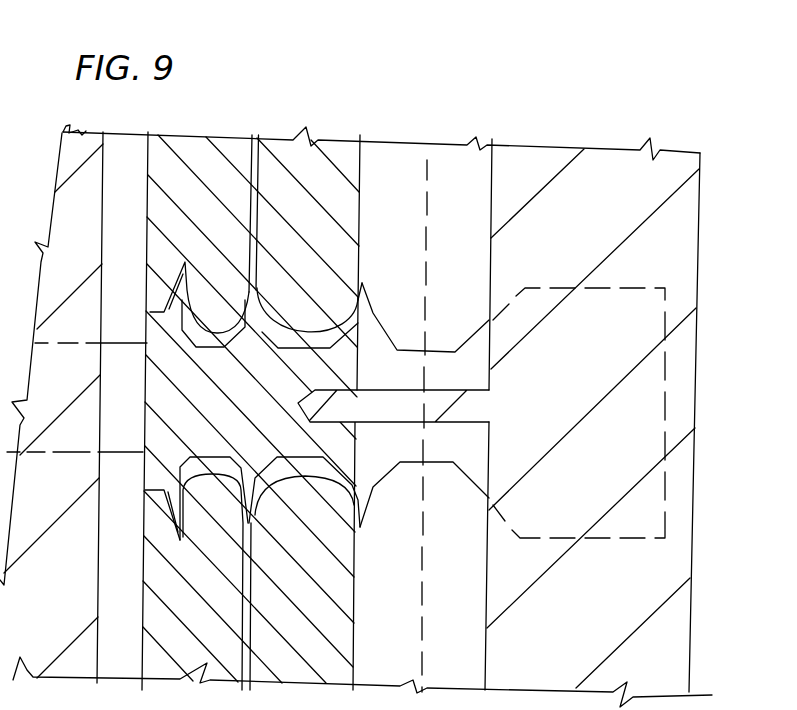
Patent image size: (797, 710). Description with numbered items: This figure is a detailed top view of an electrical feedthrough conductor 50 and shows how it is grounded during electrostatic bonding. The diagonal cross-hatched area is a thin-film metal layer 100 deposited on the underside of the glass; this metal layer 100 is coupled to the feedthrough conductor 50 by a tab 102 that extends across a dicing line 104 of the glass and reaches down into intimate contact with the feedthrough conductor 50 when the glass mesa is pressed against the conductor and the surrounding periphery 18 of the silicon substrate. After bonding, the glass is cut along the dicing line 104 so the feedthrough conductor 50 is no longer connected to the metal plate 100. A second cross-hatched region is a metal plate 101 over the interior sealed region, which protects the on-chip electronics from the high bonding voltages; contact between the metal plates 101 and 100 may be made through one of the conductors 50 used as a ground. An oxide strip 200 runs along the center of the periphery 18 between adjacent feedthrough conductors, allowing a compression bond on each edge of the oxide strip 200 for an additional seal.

The periphery 18 is at (201, 628).
The feedthrough conductor 50 is at (399, 454).
The thin-film metal layer 100 is at (600, 234).
The metal plate 101 is at (96, 225).
The tab 102 is at (401, 396).
The dicing line 104 is at (427, 162).
The oxide strip 200 is at (251, 228).